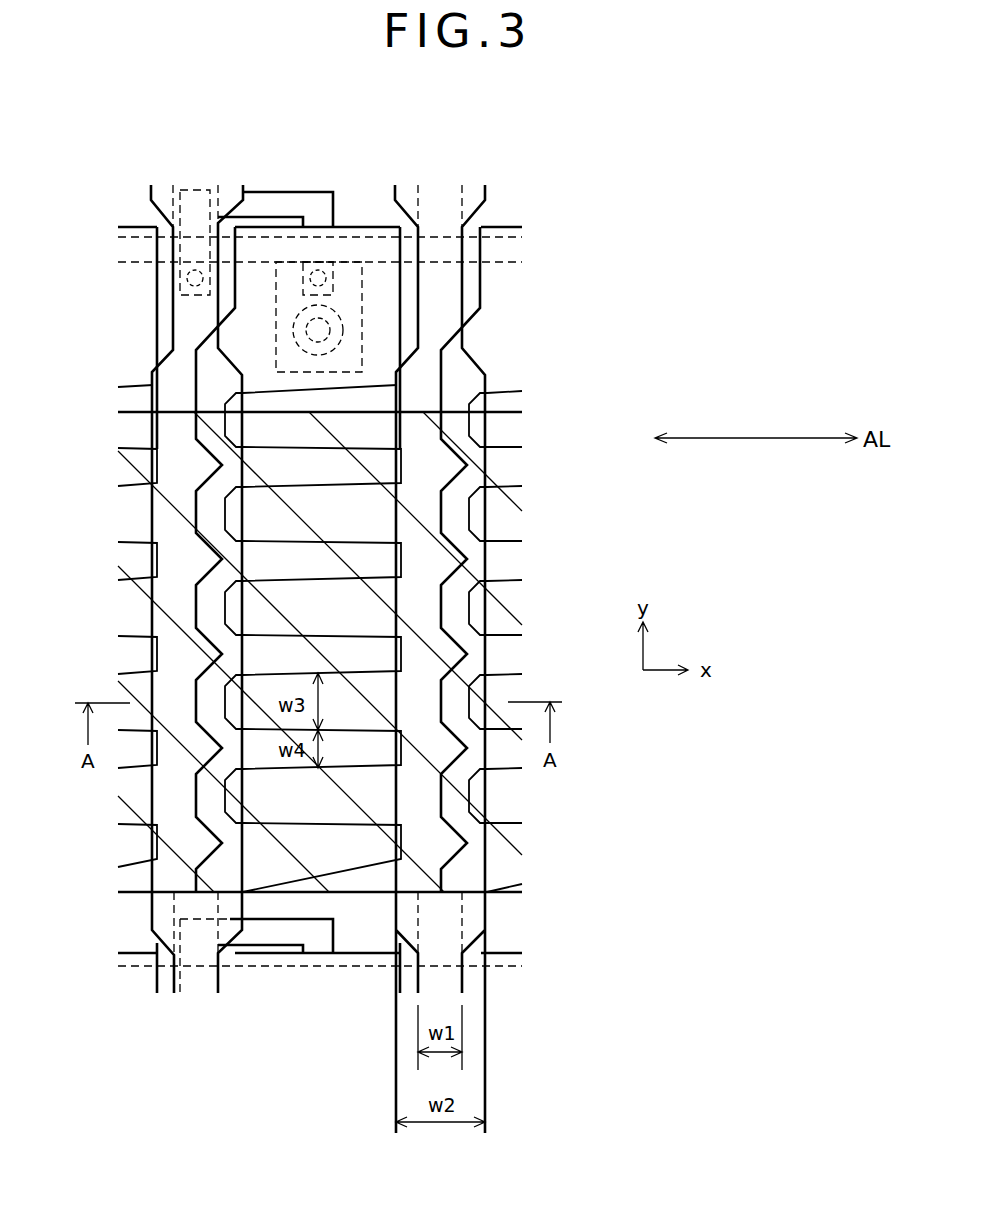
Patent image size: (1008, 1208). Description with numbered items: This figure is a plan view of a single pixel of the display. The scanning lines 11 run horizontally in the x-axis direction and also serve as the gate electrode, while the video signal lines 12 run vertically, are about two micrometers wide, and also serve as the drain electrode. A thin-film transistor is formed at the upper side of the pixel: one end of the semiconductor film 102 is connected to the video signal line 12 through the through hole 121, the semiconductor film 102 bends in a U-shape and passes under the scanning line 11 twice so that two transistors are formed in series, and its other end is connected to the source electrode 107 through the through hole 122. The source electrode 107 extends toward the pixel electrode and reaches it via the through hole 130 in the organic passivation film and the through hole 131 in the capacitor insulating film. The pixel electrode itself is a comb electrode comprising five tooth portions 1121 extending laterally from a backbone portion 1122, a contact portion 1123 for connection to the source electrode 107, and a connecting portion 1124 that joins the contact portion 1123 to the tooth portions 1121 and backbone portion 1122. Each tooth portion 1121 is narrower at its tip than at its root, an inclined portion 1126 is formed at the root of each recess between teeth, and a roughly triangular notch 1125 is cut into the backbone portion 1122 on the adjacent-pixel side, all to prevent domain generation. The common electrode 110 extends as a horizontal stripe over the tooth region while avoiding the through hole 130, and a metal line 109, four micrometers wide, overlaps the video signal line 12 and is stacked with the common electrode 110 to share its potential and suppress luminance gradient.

The semiconductor film 102 is at (268, 192).
The through hole 122 is at (333, 277).
The scanning line 11 is at (372, 237).
The video signal line 12 is at (443, 192).
The metal line 109 is at (485, 190).
The through hole 121 is at (187, 279).
The source electrode 107 is at (287, 303).
The connecting portion 1124 is at (208, 386).
The contact portion 1123 is at (387, 303).
The through hole 131 is at (331, 330).
The through hole 130 is at (340, 343).
The common electrode 110 is at (367, 624).
The notch 1125 is at (212, 560).
The backbone portion 1122 is at (207, 618).
The tooth portions 1121 is at (312, 570).
The inclined portion 1126 is at (245, 615).